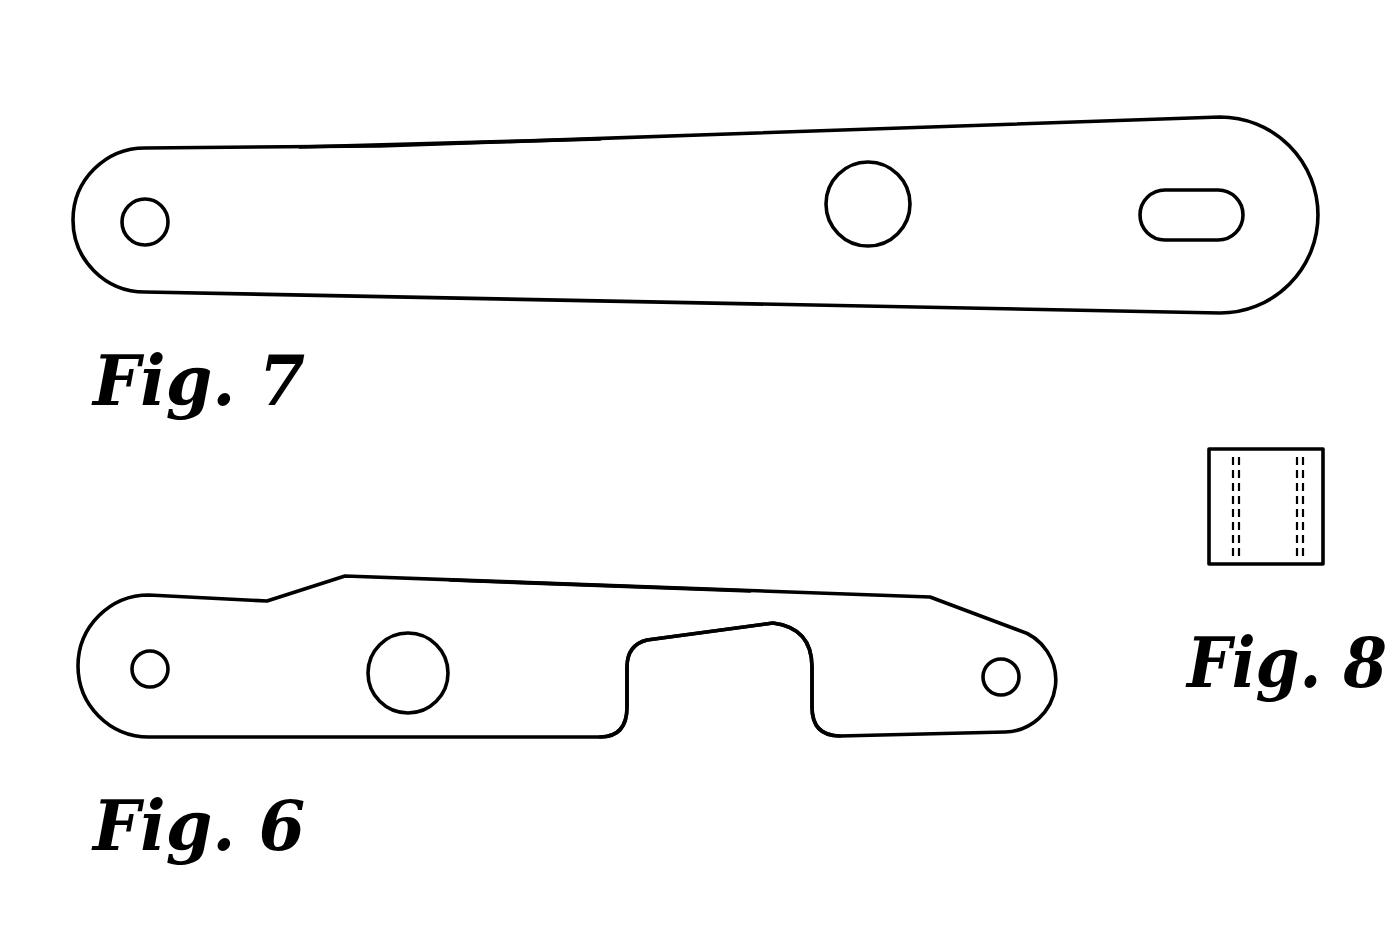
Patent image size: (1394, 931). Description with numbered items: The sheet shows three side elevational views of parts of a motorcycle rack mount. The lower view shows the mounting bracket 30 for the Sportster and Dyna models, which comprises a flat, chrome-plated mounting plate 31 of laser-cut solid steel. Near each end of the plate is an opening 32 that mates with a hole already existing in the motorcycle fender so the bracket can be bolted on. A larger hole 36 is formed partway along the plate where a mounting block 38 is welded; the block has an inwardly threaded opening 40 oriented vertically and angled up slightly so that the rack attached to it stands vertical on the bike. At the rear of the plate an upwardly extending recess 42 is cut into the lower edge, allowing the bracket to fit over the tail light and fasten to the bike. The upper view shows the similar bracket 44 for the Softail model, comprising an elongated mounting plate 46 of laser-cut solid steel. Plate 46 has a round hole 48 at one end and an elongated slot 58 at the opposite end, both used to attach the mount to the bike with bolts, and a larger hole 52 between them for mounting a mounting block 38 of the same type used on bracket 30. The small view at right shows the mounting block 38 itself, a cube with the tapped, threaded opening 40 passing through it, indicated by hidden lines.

In FIG. 6, the mounting bracket 30 is at (694, 570).
In FIG. 6, the mounting plate 31 is at (562, 613).
In FIG. 6, the openings 32 is at (154, 652).
In FIG. 6, the central aperture 36 is at (416, 635).
In FIG. 8, the mounting block 38 is at (1203, 478).
In FIG. 8, the threaded opening 40 is at (1272, 448).
In FIG. 6, the recess 42 is at (718, 696).
In FIG. 7, the bracket 44 is at (573, 130).
In FIG. 7, the mounting plate 46 is at (381, 147).
In FIG. 7, the hole 48 is at (146, 199).
In FIG. 7, the hole 52 is at (877, 163).
In FIG. 7, the slot 58 is at (1198, 192).